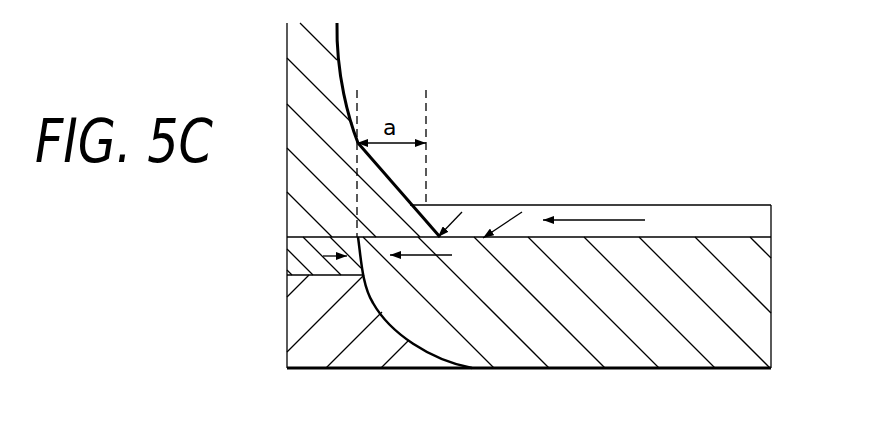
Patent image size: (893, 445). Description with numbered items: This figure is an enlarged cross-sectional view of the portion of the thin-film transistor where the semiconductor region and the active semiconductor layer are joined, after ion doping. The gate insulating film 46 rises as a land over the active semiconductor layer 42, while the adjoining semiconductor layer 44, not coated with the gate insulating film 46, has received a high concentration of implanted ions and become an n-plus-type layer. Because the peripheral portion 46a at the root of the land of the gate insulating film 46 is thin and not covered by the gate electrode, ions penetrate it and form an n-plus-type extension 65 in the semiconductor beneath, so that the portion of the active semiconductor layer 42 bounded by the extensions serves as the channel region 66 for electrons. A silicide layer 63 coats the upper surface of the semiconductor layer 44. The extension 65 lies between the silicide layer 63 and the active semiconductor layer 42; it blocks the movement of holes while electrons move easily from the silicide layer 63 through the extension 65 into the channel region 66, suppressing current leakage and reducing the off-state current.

The active semiconductor layer 42 is at (310, 327).
The semiconductor layer 44 is at (747, 270).
The gate insulating film 46 is at (320, 75).
The peripheral portion of the root of the land of the gate insulating film 46a is at (382, 212).
The silicide layer 63 is at (738, 216).
The extension 65 is at (389, 275).
The channel region 66 is at (302, 256).